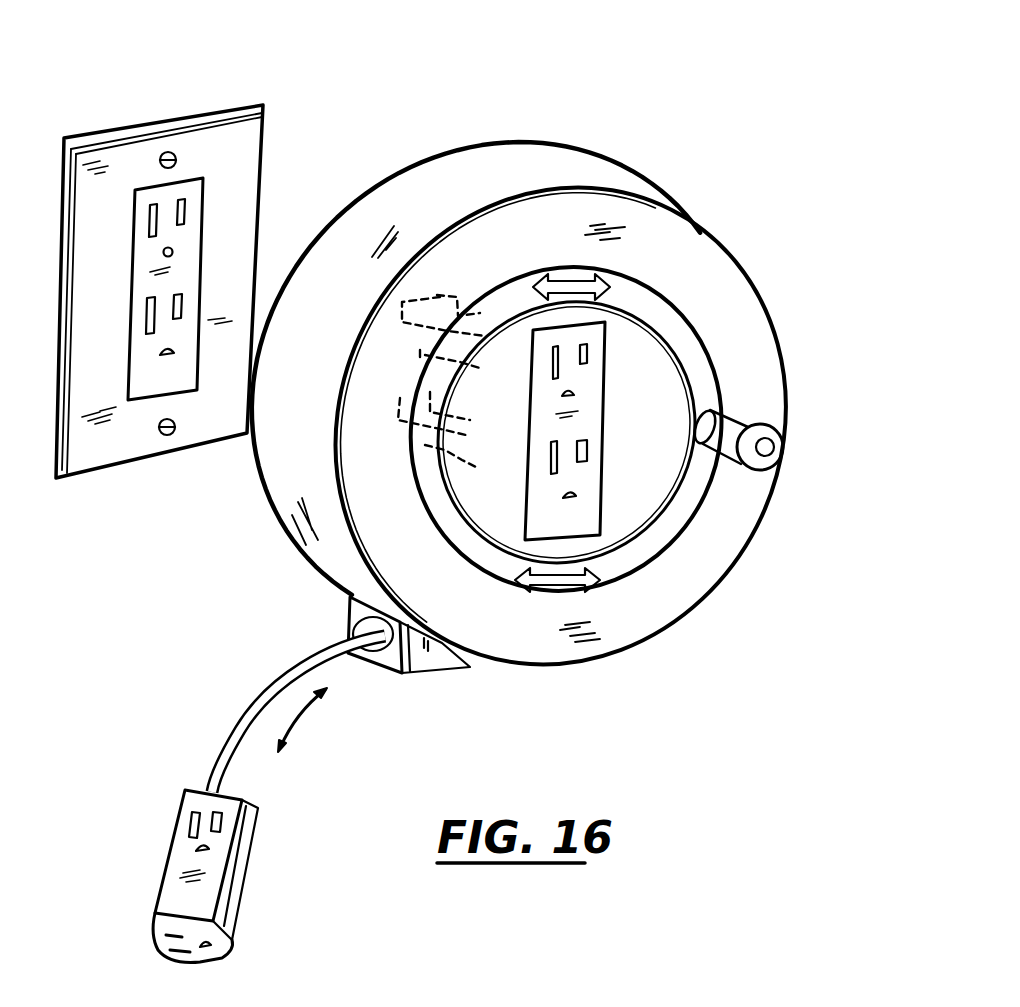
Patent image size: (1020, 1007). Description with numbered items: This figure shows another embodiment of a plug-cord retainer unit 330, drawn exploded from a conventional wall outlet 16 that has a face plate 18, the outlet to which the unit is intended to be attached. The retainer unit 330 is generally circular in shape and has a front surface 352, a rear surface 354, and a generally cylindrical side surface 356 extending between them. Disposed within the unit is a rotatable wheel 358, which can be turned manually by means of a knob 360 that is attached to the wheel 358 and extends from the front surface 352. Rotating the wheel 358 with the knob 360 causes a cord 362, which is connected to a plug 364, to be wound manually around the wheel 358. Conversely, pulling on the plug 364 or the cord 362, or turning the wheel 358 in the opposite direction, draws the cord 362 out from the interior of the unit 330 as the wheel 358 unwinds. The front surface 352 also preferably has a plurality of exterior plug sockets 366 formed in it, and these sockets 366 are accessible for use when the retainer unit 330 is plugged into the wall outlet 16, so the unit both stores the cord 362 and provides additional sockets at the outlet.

The wall outlet 16 is at (115, 104).
The face plate 18 is at (235, 145).
The cord reel power supply assembly 330 is at (537, 111).
The front surface 352 is at (737, 313).
The rear surface 354 is at (392, 175).
The cylindrical side surface 356 is at (558, 172).
The rotatable wheel 358 is at (640, 297).
The knob 360 is at (735, 405).
The cord 362 is at (237, 752).
The plug 364 is at (233, 900).
The exterior plug sockets 366 is at (588, 358).